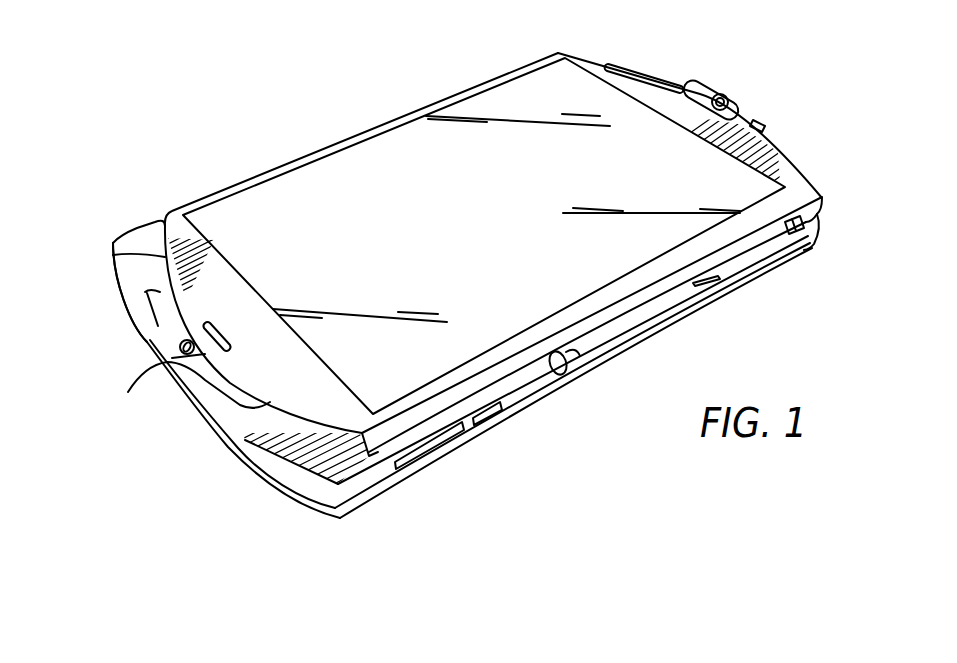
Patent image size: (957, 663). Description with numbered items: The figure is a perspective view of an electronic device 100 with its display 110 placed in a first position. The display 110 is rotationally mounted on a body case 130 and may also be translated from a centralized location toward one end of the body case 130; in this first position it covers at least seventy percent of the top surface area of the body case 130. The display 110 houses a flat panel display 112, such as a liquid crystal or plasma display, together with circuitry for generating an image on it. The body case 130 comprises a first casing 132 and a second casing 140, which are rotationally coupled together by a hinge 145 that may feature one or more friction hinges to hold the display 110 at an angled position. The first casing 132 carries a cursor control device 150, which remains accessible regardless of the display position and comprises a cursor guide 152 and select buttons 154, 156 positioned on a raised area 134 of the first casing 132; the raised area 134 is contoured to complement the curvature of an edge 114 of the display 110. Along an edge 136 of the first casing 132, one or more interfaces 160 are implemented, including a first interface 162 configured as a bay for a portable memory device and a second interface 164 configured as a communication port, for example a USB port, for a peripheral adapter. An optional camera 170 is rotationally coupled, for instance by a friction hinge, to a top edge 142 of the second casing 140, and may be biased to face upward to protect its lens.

The electronic device 100 is at (760, 33).
The display 110 is at (233, 178).
The flat panel display 112 is at (270, 233).
The edge of the display 114 is at (113, 255).
The body case 130 is at (838, 170).
The first casing 132 is at (257, 468).
The raised area 134 is at (133, 245).
The edge of the first casing 136 is at (340, 493).
The second casing 140 is at (747, 252).
The top edge of the second casing 142 is at (795, 158).
The hinge 145 is at (560, 363).
The cursor control device 150 is at (182, 380).
The cursor guide 152 is at (190, 345).
The select button 154 is at (163, 308).
The select button 156 is at (220, 378).
The interfaces 160 is at (596, 475).
The first interface 162 is at (427, 443).
The second interface 164 is at (490, 410).
The camera 170 is at (746, 122).